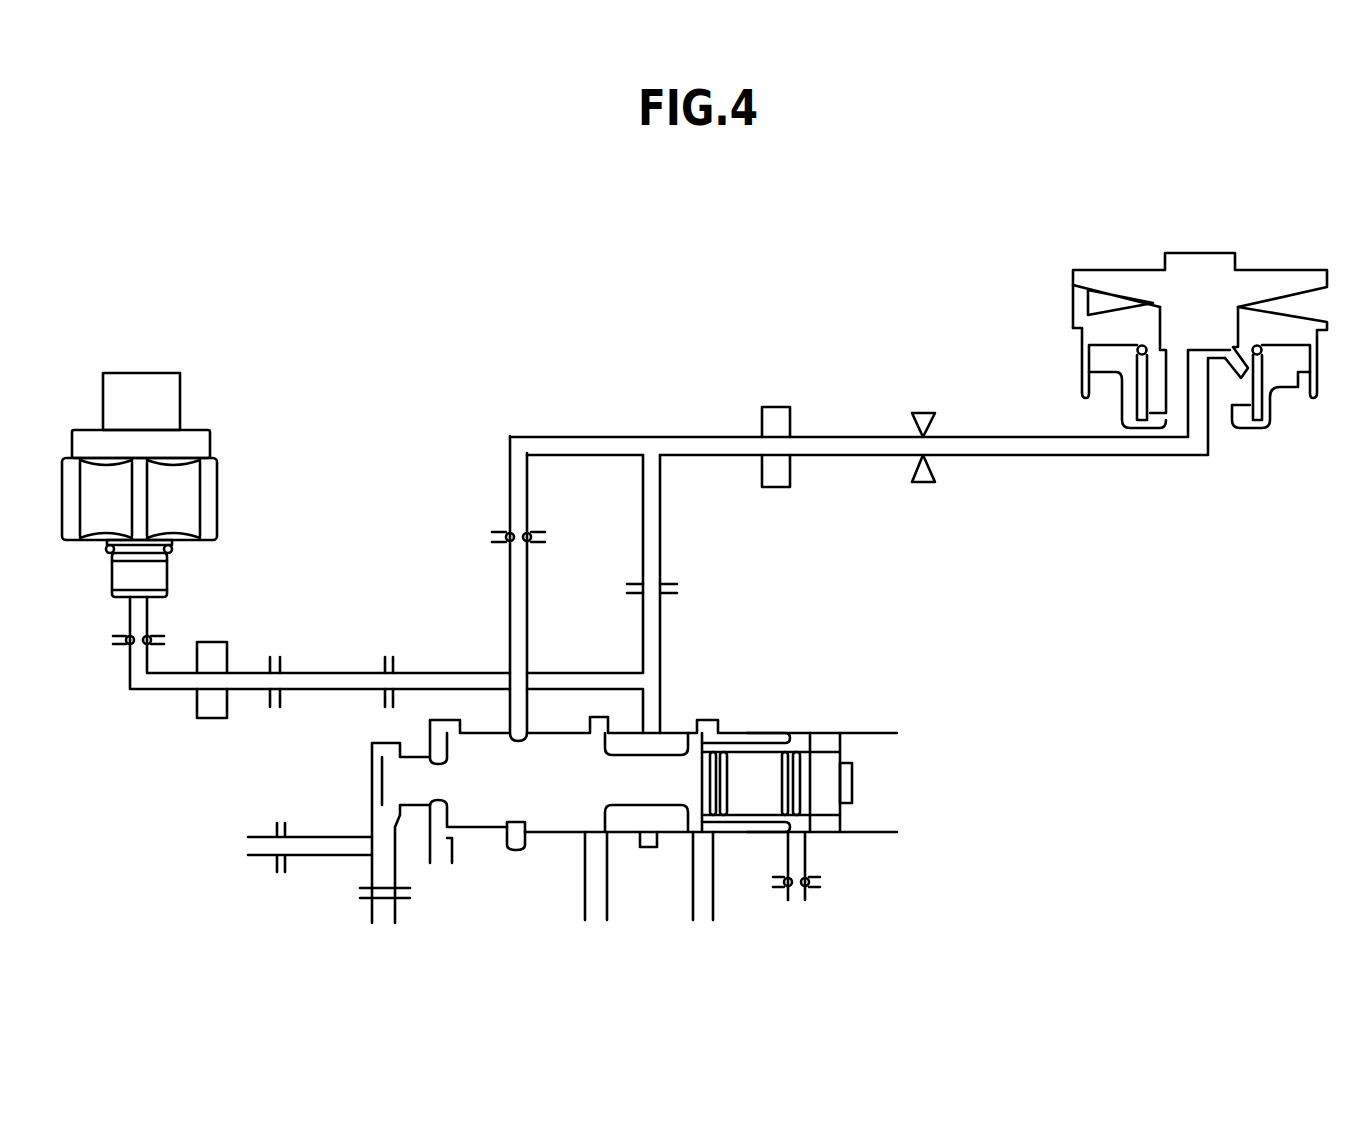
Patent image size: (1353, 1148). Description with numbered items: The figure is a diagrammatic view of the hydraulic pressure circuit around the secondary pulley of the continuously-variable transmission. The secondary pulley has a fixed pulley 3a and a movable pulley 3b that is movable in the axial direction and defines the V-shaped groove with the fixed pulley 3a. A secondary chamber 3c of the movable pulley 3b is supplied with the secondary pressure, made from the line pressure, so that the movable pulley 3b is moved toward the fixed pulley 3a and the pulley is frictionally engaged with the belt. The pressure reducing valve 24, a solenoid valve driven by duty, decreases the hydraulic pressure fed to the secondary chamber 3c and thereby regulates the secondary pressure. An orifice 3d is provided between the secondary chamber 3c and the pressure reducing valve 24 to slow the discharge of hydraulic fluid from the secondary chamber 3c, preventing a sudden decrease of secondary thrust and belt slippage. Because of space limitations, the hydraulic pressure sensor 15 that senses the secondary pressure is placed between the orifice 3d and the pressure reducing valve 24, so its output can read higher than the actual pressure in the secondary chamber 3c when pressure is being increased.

The hydraulic pressure sensor 15 is at (160, 372).
The pressure reducing valve 24 is at (798, 738).
The fixed pulley 3a is at (1132, 288).
The movable pulley 3b is at (1108, 335).
The secondary chamber 3c is at (1287, 360).
The orifice 3d is at (925, 449).